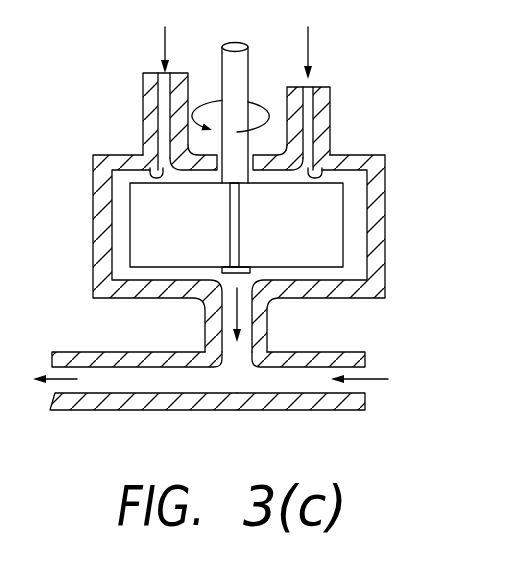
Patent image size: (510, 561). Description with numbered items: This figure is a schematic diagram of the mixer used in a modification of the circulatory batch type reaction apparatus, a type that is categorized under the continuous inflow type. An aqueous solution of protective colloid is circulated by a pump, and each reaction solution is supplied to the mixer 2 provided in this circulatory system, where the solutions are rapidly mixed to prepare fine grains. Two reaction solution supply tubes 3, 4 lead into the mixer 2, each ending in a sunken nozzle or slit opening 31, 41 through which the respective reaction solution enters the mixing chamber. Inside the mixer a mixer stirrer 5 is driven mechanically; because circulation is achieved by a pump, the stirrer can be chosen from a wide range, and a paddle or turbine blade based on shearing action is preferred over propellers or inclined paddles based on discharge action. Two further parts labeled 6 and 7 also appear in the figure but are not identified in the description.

The mixer 2 is at (93, 228).
The reaction solution supply tube 3 is at (143, 90).
The sunken nozzle or slit opening 31 is at (150, 160).
The reaction solution supply tube 4 is at (330, 110).
The sunken nozzle or slit opening 41 is at (330, 160).
The mixer stirrer 5 is at (298, 250).
The outlet pipe 6 is at (118, 410).
The carrier gas inlet pipe 7 is at (347, 412).